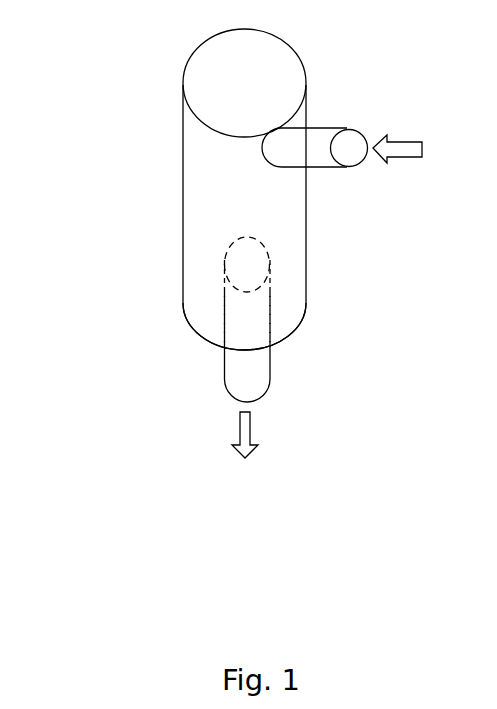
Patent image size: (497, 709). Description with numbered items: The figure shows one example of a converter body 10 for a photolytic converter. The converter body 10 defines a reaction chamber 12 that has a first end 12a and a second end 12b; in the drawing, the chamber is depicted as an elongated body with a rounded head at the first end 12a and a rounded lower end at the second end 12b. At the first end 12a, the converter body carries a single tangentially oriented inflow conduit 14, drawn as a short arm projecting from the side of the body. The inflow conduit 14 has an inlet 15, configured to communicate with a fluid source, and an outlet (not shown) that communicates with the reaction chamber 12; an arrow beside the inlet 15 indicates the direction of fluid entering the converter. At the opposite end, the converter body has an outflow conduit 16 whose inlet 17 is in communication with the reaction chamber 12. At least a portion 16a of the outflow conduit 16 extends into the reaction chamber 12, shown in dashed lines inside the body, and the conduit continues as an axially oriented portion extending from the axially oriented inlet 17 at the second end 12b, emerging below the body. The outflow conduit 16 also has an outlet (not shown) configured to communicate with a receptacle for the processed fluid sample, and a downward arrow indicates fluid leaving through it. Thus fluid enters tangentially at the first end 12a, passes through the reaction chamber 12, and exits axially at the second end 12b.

The converter body 10 is at (140, 109).
The reaction chamber 12 is at (183, 202).
The first end 12a is at (247, 82).
The second end 12b is at (195, 332).
The inflow conduit 14 is at (338, 165).
The inlet 15 is at (353, 140).
The outflow conduit 16 is at (271, 375).
The portion of the outflow conduit 16a is at (255, 320).
The inlet 17 is at (245, 270).